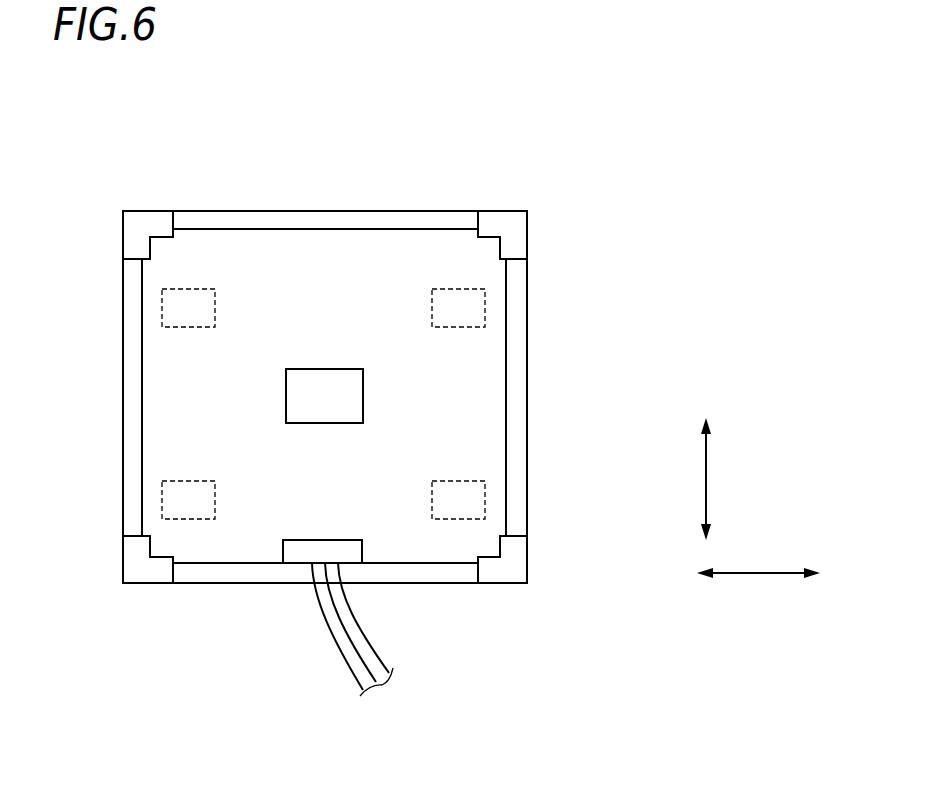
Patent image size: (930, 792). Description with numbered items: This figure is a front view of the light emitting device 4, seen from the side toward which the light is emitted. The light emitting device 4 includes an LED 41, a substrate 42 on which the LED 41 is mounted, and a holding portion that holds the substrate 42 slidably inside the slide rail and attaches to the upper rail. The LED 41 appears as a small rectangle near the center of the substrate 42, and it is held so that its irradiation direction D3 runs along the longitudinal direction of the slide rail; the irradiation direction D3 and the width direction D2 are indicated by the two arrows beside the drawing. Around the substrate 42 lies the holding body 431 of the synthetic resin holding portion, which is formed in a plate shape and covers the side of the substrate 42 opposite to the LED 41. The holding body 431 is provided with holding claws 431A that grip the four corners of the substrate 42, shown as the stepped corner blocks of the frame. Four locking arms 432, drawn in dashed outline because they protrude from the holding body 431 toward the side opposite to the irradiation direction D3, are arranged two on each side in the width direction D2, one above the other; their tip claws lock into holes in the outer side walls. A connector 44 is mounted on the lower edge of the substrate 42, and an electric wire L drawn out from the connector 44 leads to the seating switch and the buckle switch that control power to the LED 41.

The light emitting device 4 is at (559, 248).
The LED 41 is at (322, 386).
The substrate 42 is at (292, 258).
The holding body 431 is at (217, 220).
The holding claws 431A is at (140, 217).
The locking arms 432 is at (163, 303).
The connector 44 is at (295, 553).
The electric wire L is at (363, 635).
The width direction D2 is at (750, 576).
The irradiation direction D3 is at (706, 476).